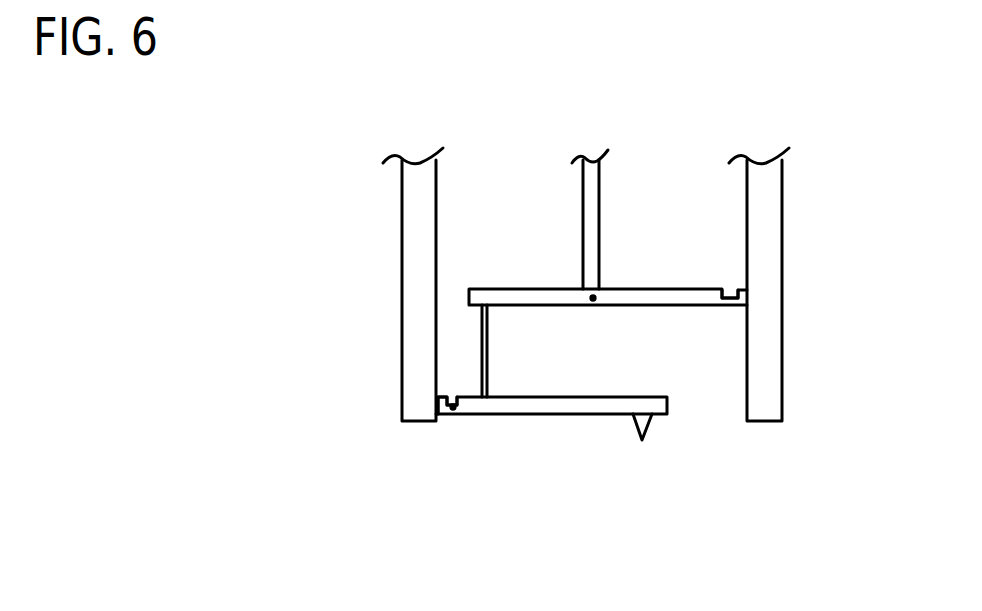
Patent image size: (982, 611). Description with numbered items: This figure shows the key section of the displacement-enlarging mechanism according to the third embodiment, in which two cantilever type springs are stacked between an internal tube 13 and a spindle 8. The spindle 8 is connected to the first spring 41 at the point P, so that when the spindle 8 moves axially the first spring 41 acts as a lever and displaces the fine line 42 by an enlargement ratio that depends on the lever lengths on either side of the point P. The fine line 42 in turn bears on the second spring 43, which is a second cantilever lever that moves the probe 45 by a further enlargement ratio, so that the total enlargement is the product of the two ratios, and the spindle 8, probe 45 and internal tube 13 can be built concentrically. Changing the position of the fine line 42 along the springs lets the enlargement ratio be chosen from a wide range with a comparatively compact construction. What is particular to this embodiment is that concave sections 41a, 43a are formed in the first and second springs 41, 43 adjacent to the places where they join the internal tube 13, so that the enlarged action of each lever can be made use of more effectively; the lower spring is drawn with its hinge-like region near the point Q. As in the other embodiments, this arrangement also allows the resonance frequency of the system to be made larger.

The spindle 8 is at (593, 207).
The internal tube 13 is at (770, 237).
The first spring 41 is at (666, 297).
The concave section 41a is at (728, 307).
The fine line 42 is at (487, 345).
The second spring 43 is at (530, 414).
The concave section 43a is at (453, 398).
The probe 45 is at (647, 424).
The connecting point P is at (594, 301).
The point Q is at (453, 414).